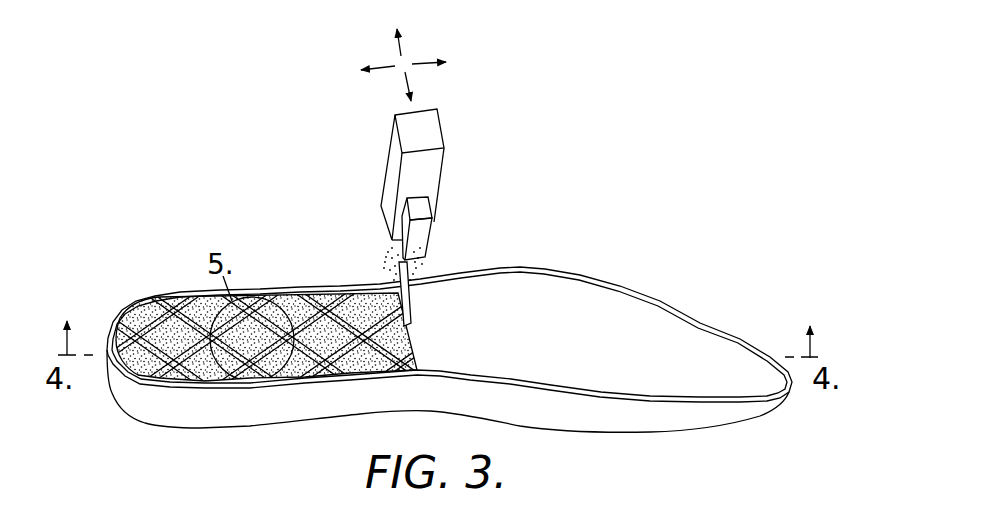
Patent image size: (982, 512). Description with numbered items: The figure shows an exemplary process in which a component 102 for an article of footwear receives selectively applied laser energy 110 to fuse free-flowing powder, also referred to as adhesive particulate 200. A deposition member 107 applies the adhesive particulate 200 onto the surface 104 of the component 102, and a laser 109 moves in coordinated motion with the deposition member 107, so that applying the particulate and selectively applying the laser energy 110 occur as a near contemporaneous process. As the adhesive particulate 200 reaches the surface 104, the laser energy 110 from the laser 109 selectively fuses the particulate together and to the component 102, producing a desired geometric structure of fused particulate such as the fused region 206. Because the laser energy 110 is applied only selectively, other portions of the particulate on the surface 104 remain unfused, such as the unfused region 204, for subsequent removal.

The component 102 is at (207, 411).
The surface 104 is at (607, 304).
The deposition member 107 is at (426, 127).
The laser 109 is at (424, 229).
The laser energy 110 is at (413, 302).
The adhesive particulate 200 is at (388, 255).
The unfused region 204 is at (150, 339).
The fused region 206 is at (185, 339).